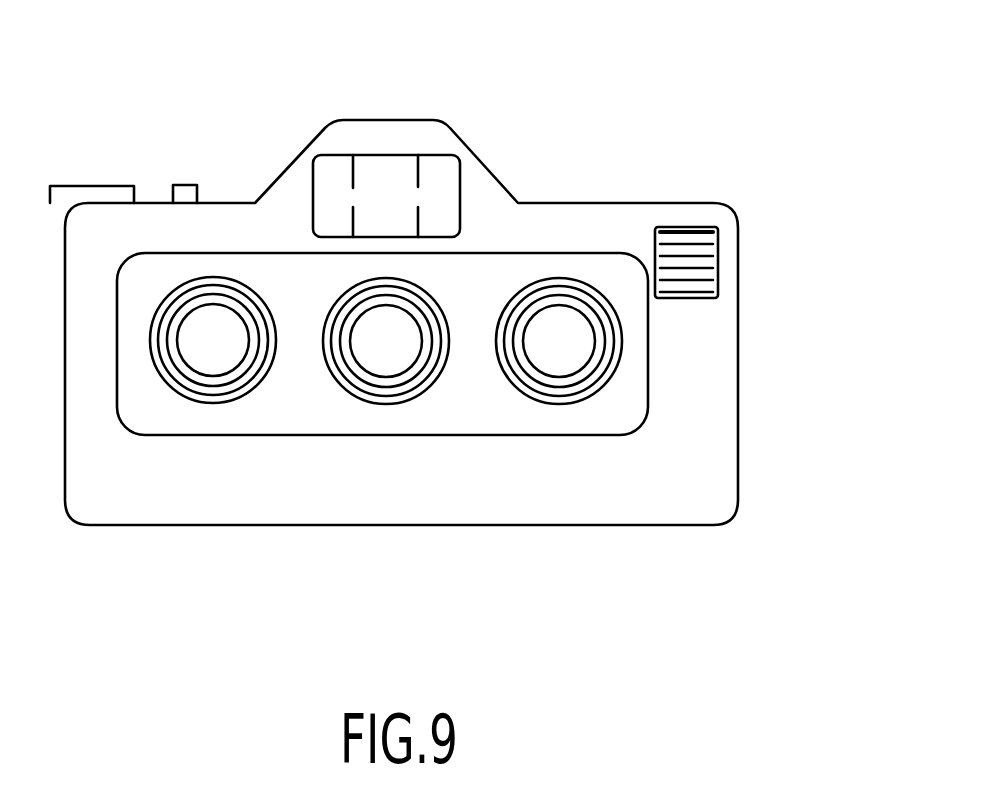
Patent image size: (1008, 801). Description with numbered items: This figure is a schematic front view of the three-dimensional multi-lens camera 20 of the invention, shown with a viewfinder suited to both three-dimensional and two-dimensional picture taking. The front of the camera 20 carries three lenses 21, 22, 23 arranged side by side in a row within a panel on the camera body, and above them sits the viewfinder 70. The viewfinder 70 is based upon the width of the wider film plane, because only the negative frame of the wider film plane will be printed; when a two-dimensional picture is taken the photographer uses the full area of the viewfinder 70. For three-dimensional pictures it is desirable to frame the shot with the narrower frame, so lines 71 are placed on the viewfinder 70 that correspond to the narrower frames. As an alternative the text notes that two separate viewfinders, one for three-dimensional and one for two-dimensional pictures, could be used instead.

The camera 20 is at (723, 408).
The first taking lens 21 is at (559, 404).
The second taking lens 22 is at (386, 404).
The third taking lens 23 is at (213, 403).
The viewfinder 70 is at (452, 193).
The lines 71 is at (353, 207).